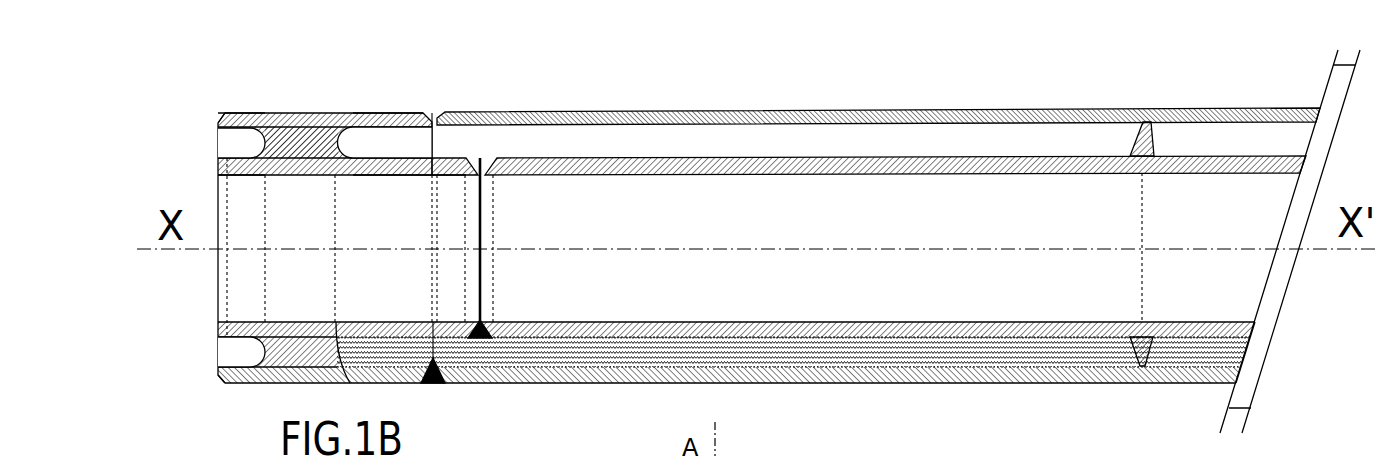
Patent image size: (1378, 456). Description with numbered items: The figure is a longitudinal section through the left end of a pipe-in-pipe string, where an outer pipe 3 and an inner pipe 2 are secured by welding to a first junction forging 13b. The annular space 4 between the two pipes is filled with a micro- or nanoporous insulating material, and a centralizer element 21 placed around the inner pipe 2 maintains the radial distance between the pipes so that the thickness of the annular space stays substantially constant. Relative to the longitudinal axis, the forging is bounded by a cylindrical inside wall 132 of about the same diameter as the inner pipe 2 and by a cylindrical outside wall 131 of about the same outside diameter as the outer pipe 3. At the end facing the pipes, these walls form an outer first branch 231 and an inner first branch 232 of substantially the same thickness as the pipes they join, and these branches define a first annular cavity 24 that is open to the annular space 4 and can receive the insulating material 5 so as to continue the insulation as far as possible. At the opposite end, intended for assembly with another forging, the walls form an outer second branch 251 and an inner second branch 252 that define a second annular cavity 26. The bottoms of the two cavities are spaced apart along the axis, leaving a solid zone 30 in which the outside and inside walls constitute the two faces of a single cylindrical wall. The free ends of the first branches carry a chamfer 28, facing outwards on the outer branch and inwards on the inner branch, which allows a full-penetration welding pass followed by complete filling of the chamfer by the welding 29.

The inner pipe 2 is at (744, 320).
The outer pipe 3 is at (930, 118).
The annular space with insulating material 4 is at (672, 142).
The insulating material 5 is at (983, 360).
The first junction forging 13b is at (212, 117).
The cylindrical outside wall 131 is at (296, 113).
The cylindrical inside wall 132 is at (300, 176).
The centralizer element 21 is at (1147, 127).
The first annular cavity 24 is at (363, 140).
The second annular cavity 26 is at (243, 146).
The chamfer 28 is at (433, 113).
The welding 29 is at (486, 322).
The solid zone 30 is at (318, 130).
The outer first branch 231 is at (383, 113).
The inner first branch 232 is at (385, 176).
The outer second branch 251 is at (232, 113).
The inner second branch 252 is at (240, 176).